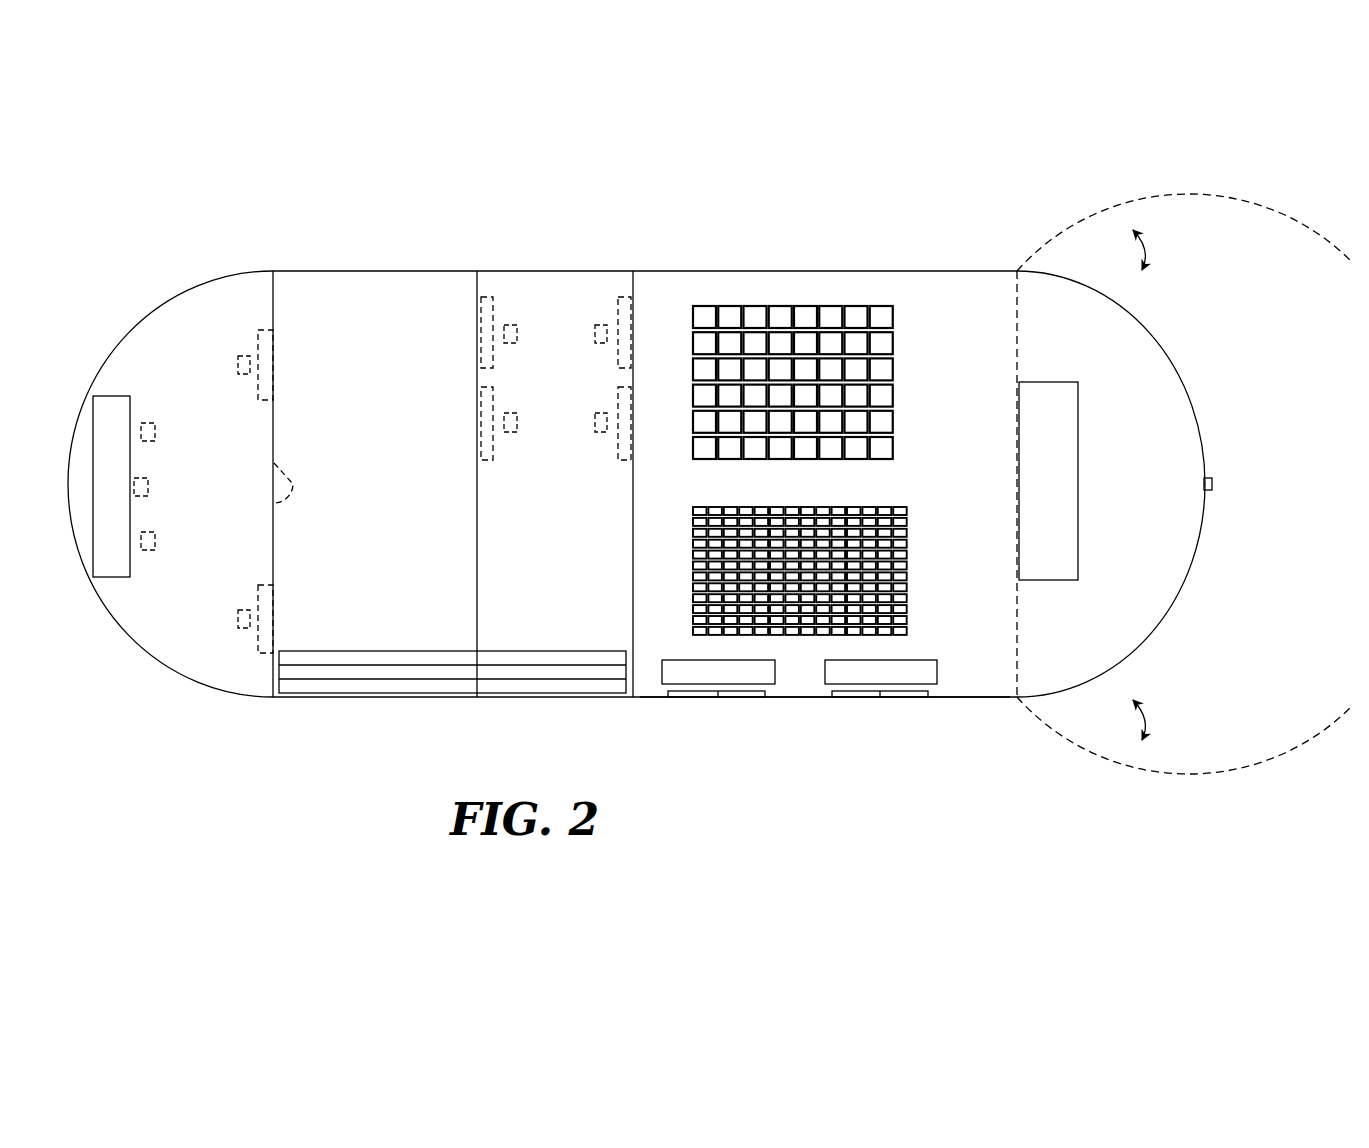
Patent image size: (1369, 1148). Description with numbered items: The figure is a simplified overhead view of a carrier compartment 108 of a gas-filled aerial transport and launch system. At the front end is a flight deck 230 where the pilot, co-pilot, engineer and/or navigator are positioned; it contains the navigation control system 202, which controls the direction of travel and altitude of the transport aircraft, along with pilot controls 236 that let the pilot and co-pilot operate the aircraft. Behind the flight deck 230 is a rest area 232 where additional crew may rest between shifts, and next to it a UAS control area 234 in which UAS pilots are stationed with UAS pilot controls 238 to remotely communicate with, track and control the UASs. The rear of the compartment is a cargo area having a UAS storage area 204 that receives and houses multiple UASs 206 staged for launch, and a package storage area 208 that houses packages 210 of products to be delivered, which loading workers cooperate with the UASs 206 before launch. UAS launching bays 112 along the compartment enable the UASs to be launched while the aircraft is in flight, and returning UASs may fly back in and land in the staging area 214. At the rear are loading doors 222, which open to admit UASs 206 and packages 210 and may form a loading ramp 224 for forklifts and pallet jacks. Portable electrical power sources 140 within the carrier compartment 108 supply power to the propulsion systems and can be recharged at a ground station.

The carrier compartment 108 is at (804, 234).
The UAS launching bays 112 is at (727, 695).
The portable electrical power sources 140 is at (293, 695).
The navigation control system 202 is at (115, 403).
The UAS storage area 204 is at (744, 280).
The UASs 206 is at (892, 343).
The package storage area 208 is at (792, 659).
The packages 210 is at (905, 524).
The staging area 214 is at (930, 672).
The loading doors 222 is at (1167, 360).
The loading ramps 224 is at (1041, 574).
The flight deck 230 is at (204, 293).
The rest area 232 is at (356, 280).
The UAS control area 234 is at (546, 280).
The pilot controls 236 is at (139, 566).
The UAS pilot controls 238 is at (511, 361).